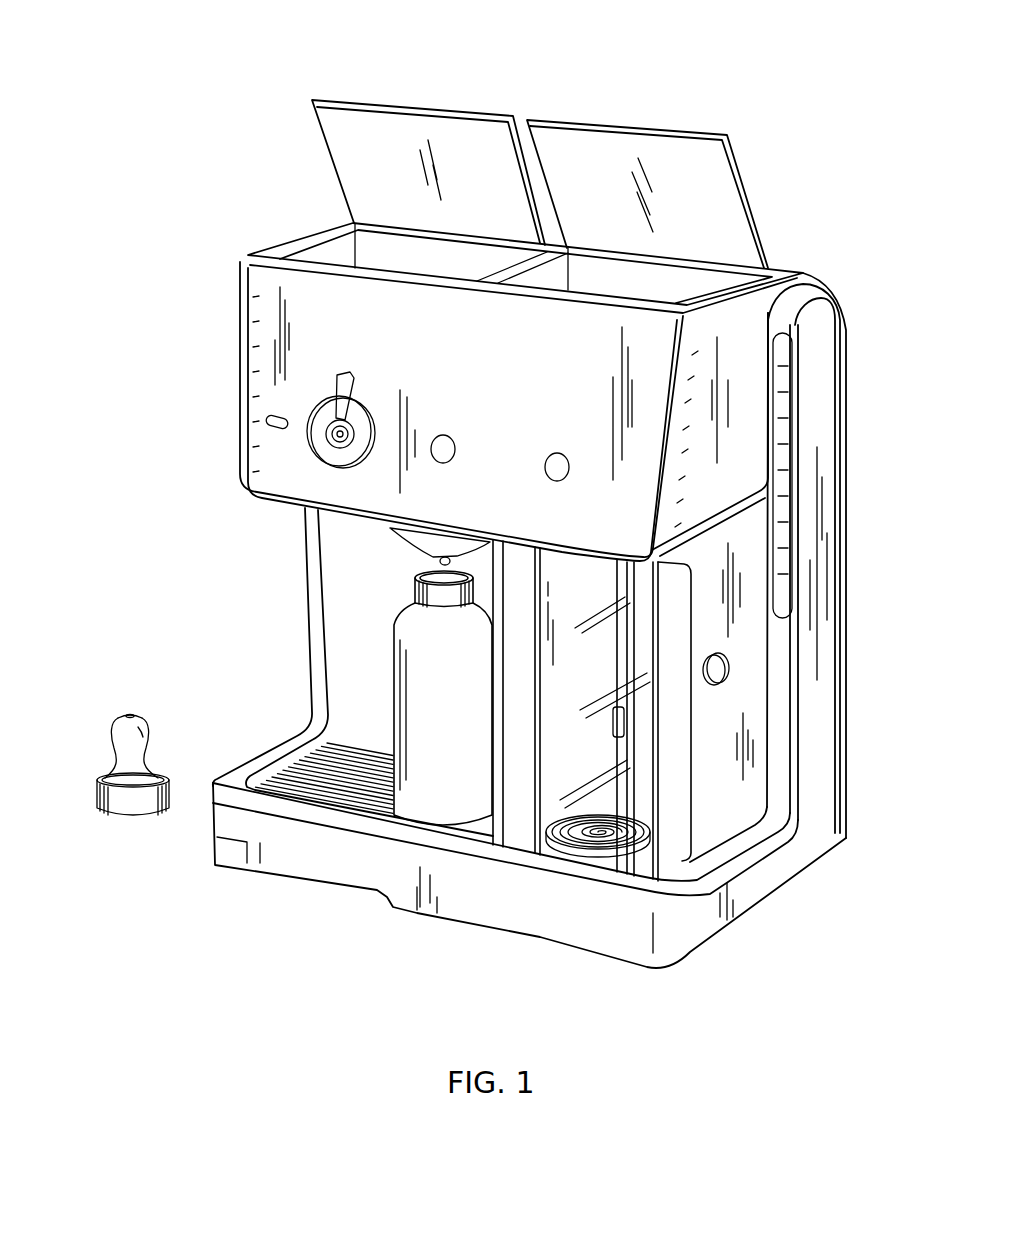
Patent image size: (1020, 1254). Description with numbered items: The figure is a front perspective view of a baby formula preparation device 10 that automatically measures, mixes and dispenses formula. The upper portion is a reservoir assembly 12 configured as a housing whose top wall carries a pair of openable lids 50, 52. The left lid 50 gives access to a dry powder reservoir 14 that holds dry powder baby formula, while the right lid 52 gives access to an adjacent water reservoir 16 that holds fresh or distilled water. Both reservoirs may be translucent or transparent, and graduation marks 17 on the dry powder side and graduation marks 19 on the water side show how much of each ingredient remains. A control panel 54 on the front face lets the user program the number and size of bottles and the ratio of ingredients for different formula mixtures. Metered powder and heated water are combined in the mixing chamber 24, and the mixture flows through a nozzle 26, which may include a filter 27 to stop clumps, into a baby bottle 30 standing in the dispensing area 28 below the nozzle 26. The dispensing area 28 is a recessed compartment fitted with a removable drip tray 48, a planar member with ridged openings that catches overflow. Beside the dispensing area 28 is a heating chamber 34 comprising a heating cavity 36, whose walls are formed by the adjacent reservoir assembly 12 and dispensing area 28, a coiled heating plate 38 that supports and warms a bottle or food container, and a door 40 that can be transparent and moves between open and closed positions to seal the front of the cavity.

The baby formula preparation device 10 is at (787, 110).
The reservoir assembly 12 is at (227, 255).
The dry powder reservoir 14 is at (377, 253).
The water reservoir 16 is at (667, 280).
The graduation marks 17 is at (257, 300).
The graduation marks 19 is at (692, 328).
The mixing chamber 24 is at (392, 528).
The nozzle 26 is at (313, 777).
The filter 27 is at (437, 535).
The dispensing area 28 is at (207, 495).
The baby bottle 30 is at (420, 772).
The heating chamber 34 is at (690, 727).
The heating cavity 36 is at (637, 770).
The heating plate 38 is at (590, 837).
The door 40 is at (580, 760).
The drip tray 48 is at (430, 553).
The openable lid 50 is at (400, 133).
The openable lid 52 is at (627, 158).
The control panel 54 is at (310, 293).